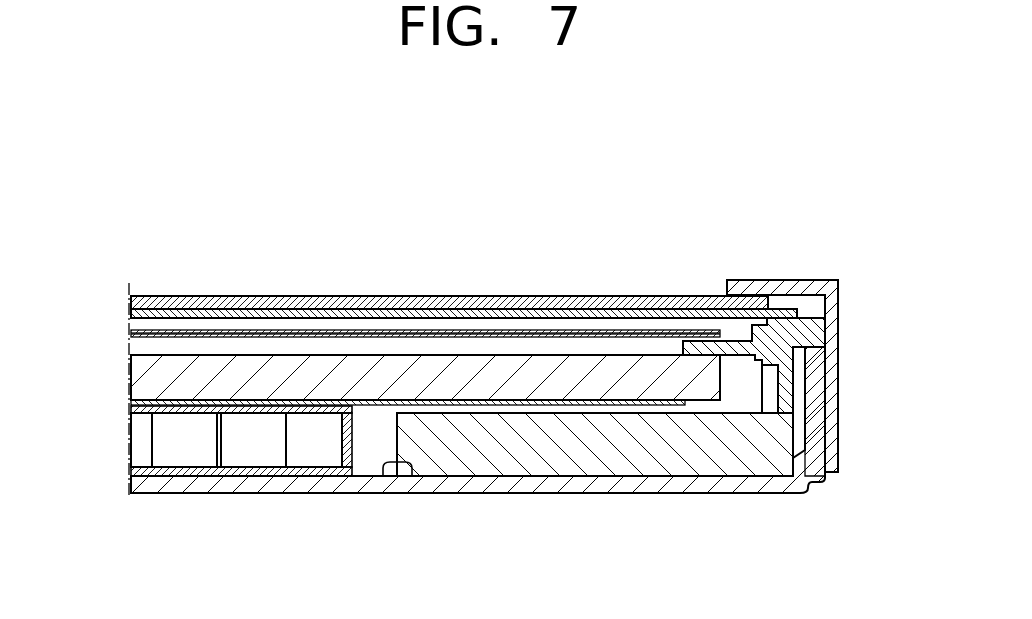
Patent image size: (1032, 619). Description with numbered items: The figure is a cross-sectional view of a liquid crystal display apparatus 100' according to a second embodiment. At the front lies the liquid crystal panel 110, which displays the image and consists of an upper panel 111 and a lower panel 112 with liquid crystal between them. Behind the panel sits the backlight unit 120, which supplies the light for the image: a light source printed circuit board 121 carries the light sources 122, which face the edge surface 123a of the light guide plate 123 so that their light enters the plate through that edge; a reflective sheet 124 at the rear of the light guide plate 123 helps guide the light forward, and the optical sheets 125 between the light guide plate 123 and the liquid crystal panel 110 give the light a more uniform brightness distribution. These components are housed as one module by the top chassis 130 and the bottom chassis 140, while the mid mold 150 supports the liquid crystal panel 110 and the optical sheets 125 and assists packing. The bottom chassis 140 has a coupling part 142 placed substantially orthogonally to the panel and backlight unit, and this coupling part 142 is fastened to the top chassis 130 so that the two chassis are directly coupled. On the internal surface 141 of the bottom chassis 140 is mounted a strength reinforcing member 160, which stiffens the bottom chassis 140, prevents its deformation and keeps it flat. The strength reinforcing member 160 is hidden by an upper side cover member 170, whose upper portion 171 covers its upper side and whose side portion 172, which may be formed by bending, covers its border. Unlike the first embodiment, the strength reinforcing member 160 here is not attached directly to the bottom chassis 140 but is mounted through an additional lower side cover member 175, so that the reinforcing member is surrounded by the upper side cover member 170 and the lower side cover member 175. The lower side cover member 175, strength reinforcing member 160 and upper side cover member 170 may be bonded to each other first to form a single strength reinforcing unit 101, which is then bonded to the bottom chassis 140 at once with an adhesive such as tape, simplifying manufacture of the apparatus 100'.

The liquid crystal display apparatus 100' is at (493, 360).
The strength reinforcing unit 101 is at (340, 548).
The liquid crystal panel 110 is at (288, 284).
The upper panel 111 is at (131, 300).
The lower panel 112 is at (131, 315).
The backlight unit 120 is at (702, 240).
The light source printed circuit board 121 is at (590, 420).
The light sources 122 is at (757, 383).
The light guide plate 123 is at (472, 356).
The edge surface 123a is at (772, 392).
The reflective sheet 124 is at (522, 400).
The optical sheets 125 is at (410, 330).
The top chassis 130 is at (848, 335).
The bottom chassis 140 is at (464, 505).
The internal surface 141 is at (412, 478).
The coupling part 142 is at (818, 414).
The mid mold 150 is at (808, 320).
The strength reinforcing member 160 is at (238, 468).
The upper side cover member 170 is at (328, 466).
The upper portion 171 is at (131, 410).
The side portion 172 is at (348, 440).
The lower side cover member 175 is at (176, 473).